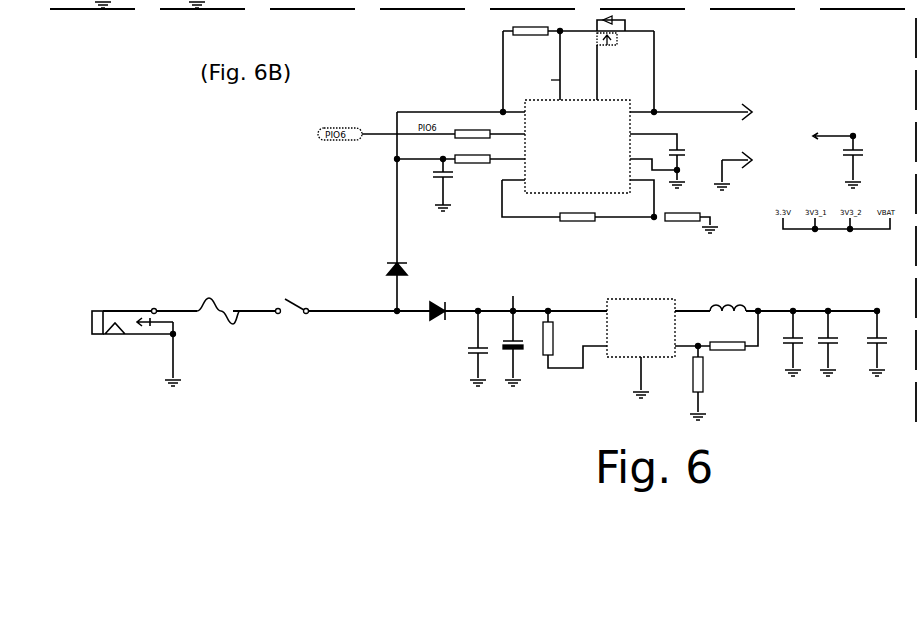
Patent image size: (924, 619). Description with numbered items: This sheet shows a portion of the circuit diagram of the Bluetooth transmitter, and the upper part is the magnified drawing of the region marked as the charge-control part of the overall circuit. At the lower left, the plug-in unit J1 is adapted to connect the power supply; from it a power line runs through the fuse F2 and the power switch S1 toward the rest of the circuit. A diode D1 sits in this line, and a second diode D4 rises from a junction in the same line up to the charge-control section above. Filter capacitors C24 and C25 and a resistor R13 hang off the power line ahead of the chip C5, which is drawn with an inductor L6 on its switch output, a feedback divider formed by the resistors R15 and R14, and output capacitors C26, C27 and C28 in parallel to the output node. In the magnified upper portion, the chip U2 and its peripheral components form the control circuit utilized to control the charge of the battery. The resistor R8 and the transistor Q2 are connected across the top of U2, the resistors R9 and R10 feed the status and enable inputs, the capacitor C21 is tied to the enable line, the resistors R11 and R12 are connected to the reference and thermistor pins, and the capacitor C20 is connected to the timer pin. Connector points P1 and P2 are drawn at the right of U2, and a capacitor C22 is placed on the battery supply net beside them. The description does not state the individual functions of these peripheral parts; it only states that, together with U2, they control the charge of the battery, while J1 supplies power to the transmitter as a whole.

In FIG. 6B, the control circuit chip U2 is at (578, 143).
In FIG. 6B, the resistor 220mR R8 is at (578, 17).
In FIG. 6B, the MOSFET NDS356AP Q2 is at (607, 23).
In FIG. 6B, the resistor 1K R9 is at (473, 129).
In FIG. 6B, the resistor 100K R10 is at (472, 160).
In FIG. 6B, the capacitor 10u C21 is at (435, 185).
In FIG. 6B, the resistor 100K R11 is at (576, 218).
In FIG. 6B, the resistor 51K R12 is at (690, 218).
In FIG. 6B, the capacitor 0.1u C20 is at (685, 159).
In FIG. 6B, the connector P1 is at (749, 106).
In FIG. 6B, the connector P2 is at (735, 163).
In FIG. 6B, the capacitor 10uF C22 is at (847, 153).
In FIG. 6, the plug-in unit J1 is at (135, 341).
In FIG. 6, the fuse 750mA F2 is at (218, 311).
In FIG. 6, the power switch S1 is at (303, 309).
In FIG. 6, the diode RB160m-20 D4 is at (366, 260).
In FIG. 6, the diode RB160m-20 D1 is at (446, 299).
In FIG. 6, the capacitor 10u C24 is at (471, 348).
In FIG. 6, the capacitor 470u C25 is at (509, 336).
In FIG. 6, the resistor 100K R13 is at (575, 339).
In FIG. 6, the regulator MP1556 C5 is at (643, 338).
In FIG. 6, the inductor 10uH L6 is at (728, 298).
In FIG. 6, the resistor 390K R15 is at (716, 337).
In FIG. 6, the resistor 91K R14 is at (705, 383).
In FIG. 6, the capacitor 10u C26 is at (785, 343).
In FIG. 6, the capacitor 104 C27 is at (835, 343).
In FIG. 6, the capacitor 10uF C28 is at (885, 333).